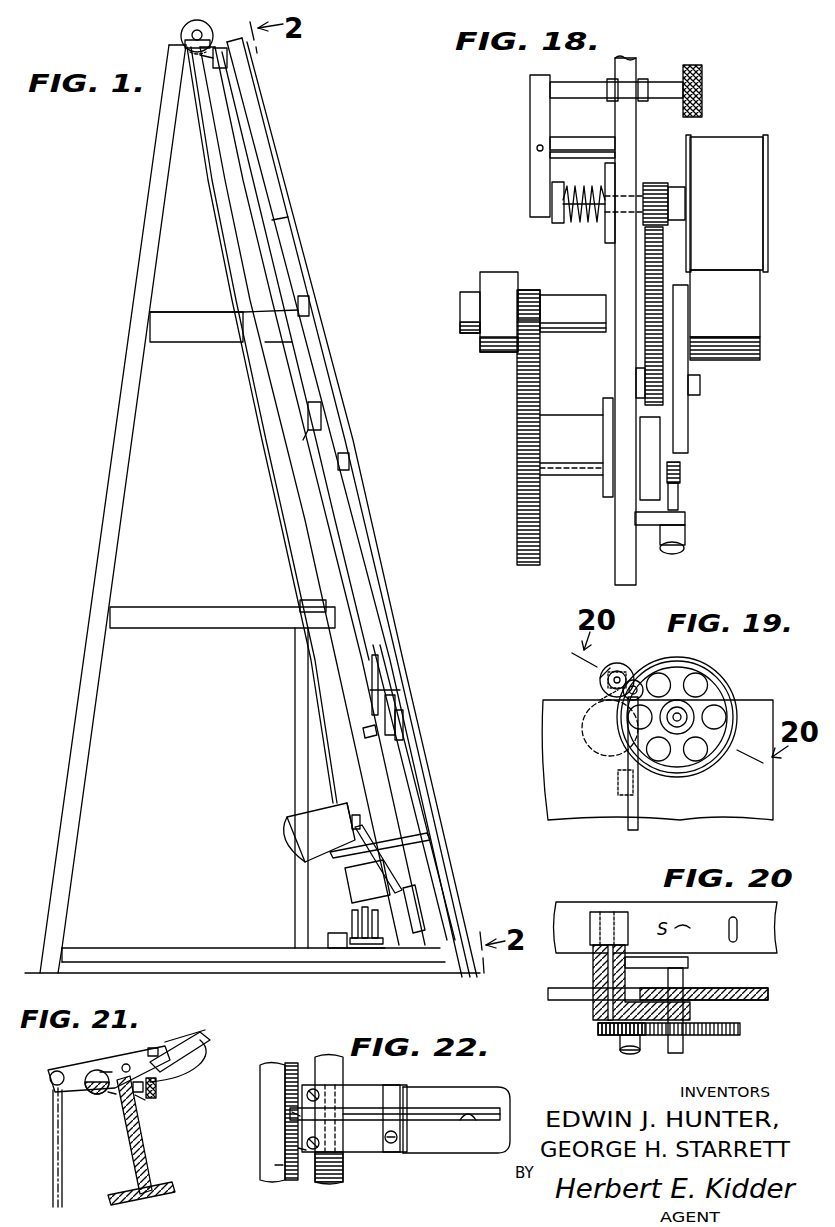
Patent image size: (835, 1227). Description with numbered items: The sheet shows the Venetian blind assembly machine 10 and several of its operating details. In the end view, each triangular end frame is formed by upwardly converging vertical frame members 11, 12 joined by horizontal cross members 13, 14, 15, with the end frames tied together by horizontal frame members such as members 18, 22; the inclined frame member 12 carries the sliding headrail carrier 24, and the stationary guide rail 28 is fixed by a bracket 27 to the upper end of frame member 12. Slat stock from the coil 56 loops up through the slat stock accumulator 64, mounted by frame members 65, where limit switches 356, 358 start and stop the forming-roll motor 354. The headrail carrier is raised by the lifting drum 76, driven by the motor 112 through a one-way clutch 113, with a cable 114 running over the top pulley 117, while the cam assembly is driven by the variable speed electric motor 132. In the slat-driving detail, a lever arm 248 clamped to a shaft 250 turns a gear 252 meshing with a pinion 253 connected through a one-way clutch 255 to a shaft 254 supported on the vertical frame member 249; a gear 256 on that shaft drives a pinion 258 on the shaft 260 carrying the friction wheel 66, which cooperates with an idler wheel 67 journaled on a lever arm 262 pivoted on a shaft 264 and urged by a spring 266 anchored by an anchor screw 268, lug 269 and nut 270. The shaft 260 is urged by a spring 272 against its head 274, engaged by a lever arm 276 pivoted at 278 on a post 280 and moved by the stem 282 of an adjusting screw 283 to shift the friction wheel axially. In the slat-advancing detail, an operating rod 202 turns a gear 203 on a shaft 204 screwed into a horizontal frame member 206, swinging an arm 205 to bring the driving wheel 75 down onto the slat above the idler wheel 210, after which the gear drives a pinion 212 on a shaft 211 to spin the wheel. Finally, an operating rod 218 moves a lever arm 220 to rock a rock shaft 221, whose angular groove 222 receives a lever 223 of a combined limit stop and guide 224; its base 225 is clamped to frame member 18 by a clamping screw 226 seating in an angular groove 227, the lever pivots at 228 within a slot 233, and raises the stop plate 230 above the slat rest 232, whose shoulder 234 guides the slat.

In FIG. 1, the machine 10 is at (322, 176).
In FIG. 1, the vertical frame member 11 is at (118, 467).
In FIG. 1, the inclined frame member 12 is at (302, 483).
In FIG. 1, the horizontal cross member 13 is at (205, 345).
In FIG. 1, the horizontal cross member 14 is at (205, 630).
In FIG. 1, the horizontal cross member 15 is at (178, 950).
In FIG. 1, the horizontal frame member 22 is at (315, 603).
In FIG. 1, the headrail carrier 24 is at (322, 414).
In FIG. 1, the bracket 27 is at (228, 56).
In FIG. 1, the guide rail 28 is at (265, 152).
In FIG. 1, the coil 56 is at (440, 855).
In FIG. 1, the slat stock accumulator 64 is at (368, 558).
In FIG. 1, the frame members 65 is at (222, 318).
In FIG. 1, the lifting drum 76 is at (350, 910).
In FIG. 1, the motor 112 is at (328, 940).
In FIG. 1, the one-way clutch 113 is at (356, 950).
In FIG. 1, the cable 114 is at (257, 432).
In FIG. 1, the pulley 117 is at (182, 34).
In FIG. 1, the variable speed electric motor 132 is at (312, 815).
In FIG. 1, the motor 354 is at (355, 880).
In FIG. 1, the limit switch 356 is at (350, 464).
In FIG. 1, the limit switch 358 is at (312, 307).
In FIG. 18, the friction wheel 66 is at (740, 210).
In FIG. 18, the idler wheel 67 is at (735, 312).
In FIG. 18, the lever arm 248 is at (650, 458).
In FIG. 18, the vertical frame member 249 is at (625, 371).
In FIG. 18, the shaft 250 is at (573, 465).
In FIG. 18, the gear 252 is at (520, 496).
In FIG. 18, the pinion 253 is at (531, 298).
In FIG. 18, the shaft 254 is at (555, 305).
In FIG. 18, the one-way clutch 255 is at (497, 282).
In FIG. 18, the gear 256 is at (650, 340).
In FIG. 18, the pinion 258 is at (655, 183).
In FIG. 18, the shaft 260 is at (588, 228).
In FIG. 18, the lever arm 262 is at (688, 410).
In FIG. 18, the shaft 264 is at (702, 383).
In FIG. 18, the spring 266 is at (680, 470).
In FIG. 18, the anchor screw 268 is at (680, 495).
In FIG. 18, the lug 269 is at (690, 518).
In FIG. 18, the nut 270 is at (688, 538).
In FIG. 18, the spring 272 is at (597, 180).
In FIG. 18, the head 274 is at (552, 218).
In FIG. 18, the lever arm 276 is at (530, 172).
In FIG. 18, the pivot 278 is at (537, 148).
In FIG. 18, the post 280 is at (598, 126).
In FIG. 18, the stem 282 is at (598, 72).
In FIG. 18, the adjusting screw 283 is at (658, 82).
In FIG. 19, the driving wheel 75 is at (605, 680).
In FIG. 20, the driving wheel 75 is at (612, 912).
In FIG. 19, the operating rod 202 is at (640, 808).
In FIG. 19, the gear 203 is at (715, 692).
In FIG. 20, the gear 203 is at (716, 1036).
In FIG. 20, the shaft 204 is at (680, 1008).
In FIG. 19, the arm 205 is at (626, 672).
In FIG. 20, the arm 205 is at (656, 1020).
In FIG. 19, the horizontal frame member 206 is at (745, 715).
In FIG. 20, the horizontal frame member 206 is at (758, 1001).
In FIG. 19, the idler wheel 210 is at (560, 736).
In FIG. 19, the shaft 211 is at (610, 698).
In FIG. 20, the shaft 211 is at (600, 973).
In FIG. 19, the pinion 212 is at (617, 665).
In FIG. 20, the pinion 212 is at (600, 1028).
In FIG. 21, the horizontal frame member 18 is at (146, 1153).
In FIG. 22, the horizontal frame member 18 is at (322, 1182).
In FIG. 21, the operating rod 218 is at (65, 1155).
In FIG. 21, the lever arm 220 is at (75, 1068).
In FIG. 21, the rock shaft 221 is at (93, 1092).
In FIG. 22, the rock shaft 221 is at (275, 1165).
In FIG. 21, the angular groove 222 is at (102, 1071).
In FIG. 22, the angular groove 222 is at (300, 1150).
In FIG. 21, the lever 223 is at (110, 1095).
In FIG. 22, the lever 223 is at (292, 1115).
In FIG. 21, the combined limit stop and guide 224 is at (180, 1066).
In FIG. 22, the combined limit stop and guide 224 is at (395, 1158).
In FIG. 21, the base 225 is at (158, 1084).
In FIG. 22, the base 225 is at (375, 1093).
In FIG. 21, the clamping screw 226 is at (145, 1093).
In FIG. 21, the angular groove 227 is at (148, 1100).
In FIG. 21, the pivot 228 is at (137, 1053).
In FIG. 22, the pivot 228 is at (360, 1160).
In FIG. 21, the stop plate 230 is at (186, 1040).
In FIG. 22, the stop plate 230 is at (455, 1108).
In FIG. 21, the slat rest 232 is at (202, 1040).
In FIG. 22, the slat rest 232 is at (480, 1148).
In FIG. 22, the slot 233 is at (468, 1118).
In FIG. 21, the shoulder 234 is at (158, 1050).
In FIG. 22, the shoulder 234 is at (412, 1145).